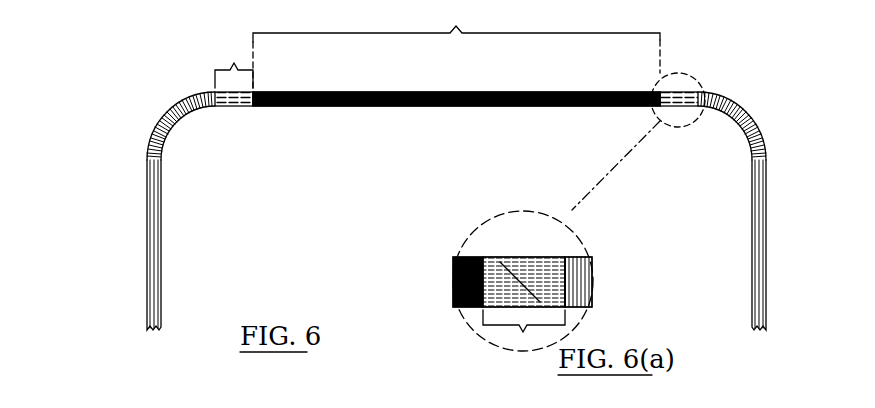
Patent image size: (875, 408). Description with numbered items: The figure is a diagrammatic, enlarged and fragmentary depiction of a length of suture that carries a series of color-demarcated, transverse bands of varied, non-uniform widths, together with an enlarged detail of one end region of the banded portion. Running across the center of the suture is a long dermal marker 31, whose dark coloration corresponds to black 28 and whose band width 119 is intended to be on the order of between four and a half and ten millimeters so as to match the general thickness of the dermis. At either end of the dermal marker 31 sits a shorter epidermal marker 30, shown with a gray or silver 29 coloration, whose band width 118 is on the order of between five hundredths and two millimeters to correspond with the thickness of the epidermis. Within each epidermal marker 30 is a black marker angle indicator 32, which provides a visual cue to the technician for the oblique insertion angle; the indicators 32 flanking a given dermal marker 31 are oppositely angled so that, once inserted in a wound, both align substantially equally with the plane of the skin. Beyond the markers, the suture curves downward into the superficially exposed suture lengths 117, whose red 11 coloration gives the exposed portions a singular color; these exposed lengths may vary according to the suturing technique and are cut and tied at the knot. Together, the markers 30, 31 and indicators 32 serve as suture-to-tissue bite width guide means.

In FIG. 6, the red color band 11 is at (160, 225).
In FIG. 6A, the red color band 11 is at (585, 258).
In FIG. 6, the black color 28 is at (455, 91).
In FIG. 6A, the black color 28 is at (475, 258).
In FIG. 6A, the gray or silver color 29 is at (523, 257).
In FIG. 6, the epidermal marker 30 is at (239, 108).
In FIG. 6A, the epidermal marker 30 is at (578, 257).
In FIG. 6, the dermal marker 31 is at (388, 91).
In FIG. 6A, the dermal marker 31 is at (478, 257).
In FIG. 6, the marker angle indicator 32 is at (232, 108).
In FIG. 6, the superficially exposed suture length 117 is at (160, 280).
In FIG. 6, the epidermal marker band width 118 is at (234, 65).
In FIG. 6A, the epidermal marker band width 118 is at (524, 333).
In FIG. 6, the dermal marker band width 119 is at (456, 48).